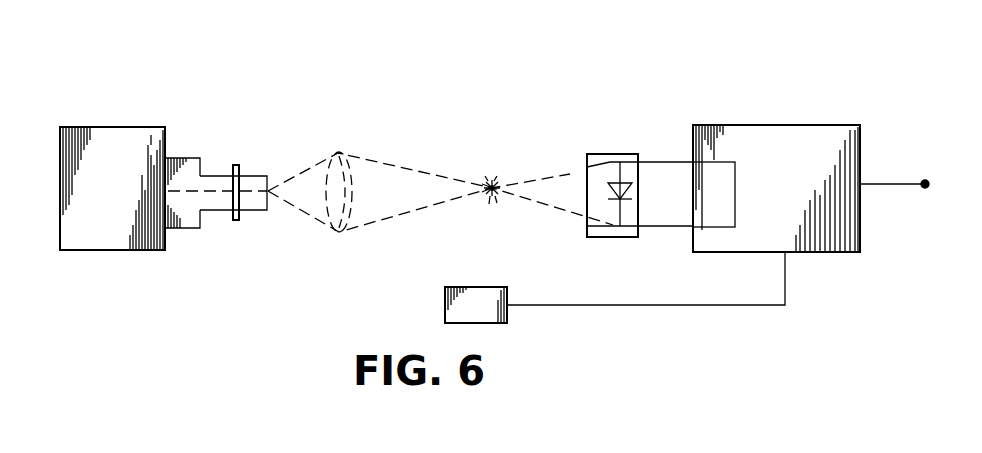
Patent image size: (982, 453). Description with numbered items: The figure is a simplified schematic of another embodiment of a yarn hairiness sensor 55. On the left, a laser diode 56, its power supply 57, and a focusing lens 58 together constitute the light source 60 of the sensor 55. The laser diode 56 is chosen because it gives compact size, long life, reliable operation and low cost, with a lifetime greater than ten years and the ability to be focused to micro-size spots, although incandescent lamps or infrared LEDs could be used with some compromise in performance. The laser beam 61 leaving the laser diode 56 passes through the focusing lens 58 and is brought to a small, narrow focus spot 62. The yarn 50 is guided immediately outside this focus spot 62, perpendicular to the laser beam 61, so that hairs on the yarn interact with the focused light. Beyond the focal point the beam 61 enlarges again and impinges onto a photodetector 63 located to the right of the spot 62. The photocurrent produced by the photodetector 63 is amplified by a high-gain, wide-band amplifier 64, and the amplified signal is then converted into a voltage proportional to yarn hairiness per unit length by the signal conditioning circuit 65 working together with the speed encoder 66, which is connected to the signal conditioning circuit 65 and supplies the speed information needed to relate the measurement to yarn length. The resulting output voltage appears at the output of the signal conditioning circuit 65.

The yarn 50 is at (498, 186).
The yarn hairiness sensor 55 is at (467, 100).
The laser diode 56 is at (257, 180).
The power supply 57 is at (140, 152).
The focusing lens 58 is at (337, 183).
The light source 60 is at (259, 224).
The laser beam 61 is at (431, 170).
The focus spot 62 is at (491, 208).
The photodetector 63 is at (602, 228).
The amplifier 64 is at (713, 187).
The signal conditioning circuit 65 is at (807, 165).
The speed encoder 66 is at (445, 303).